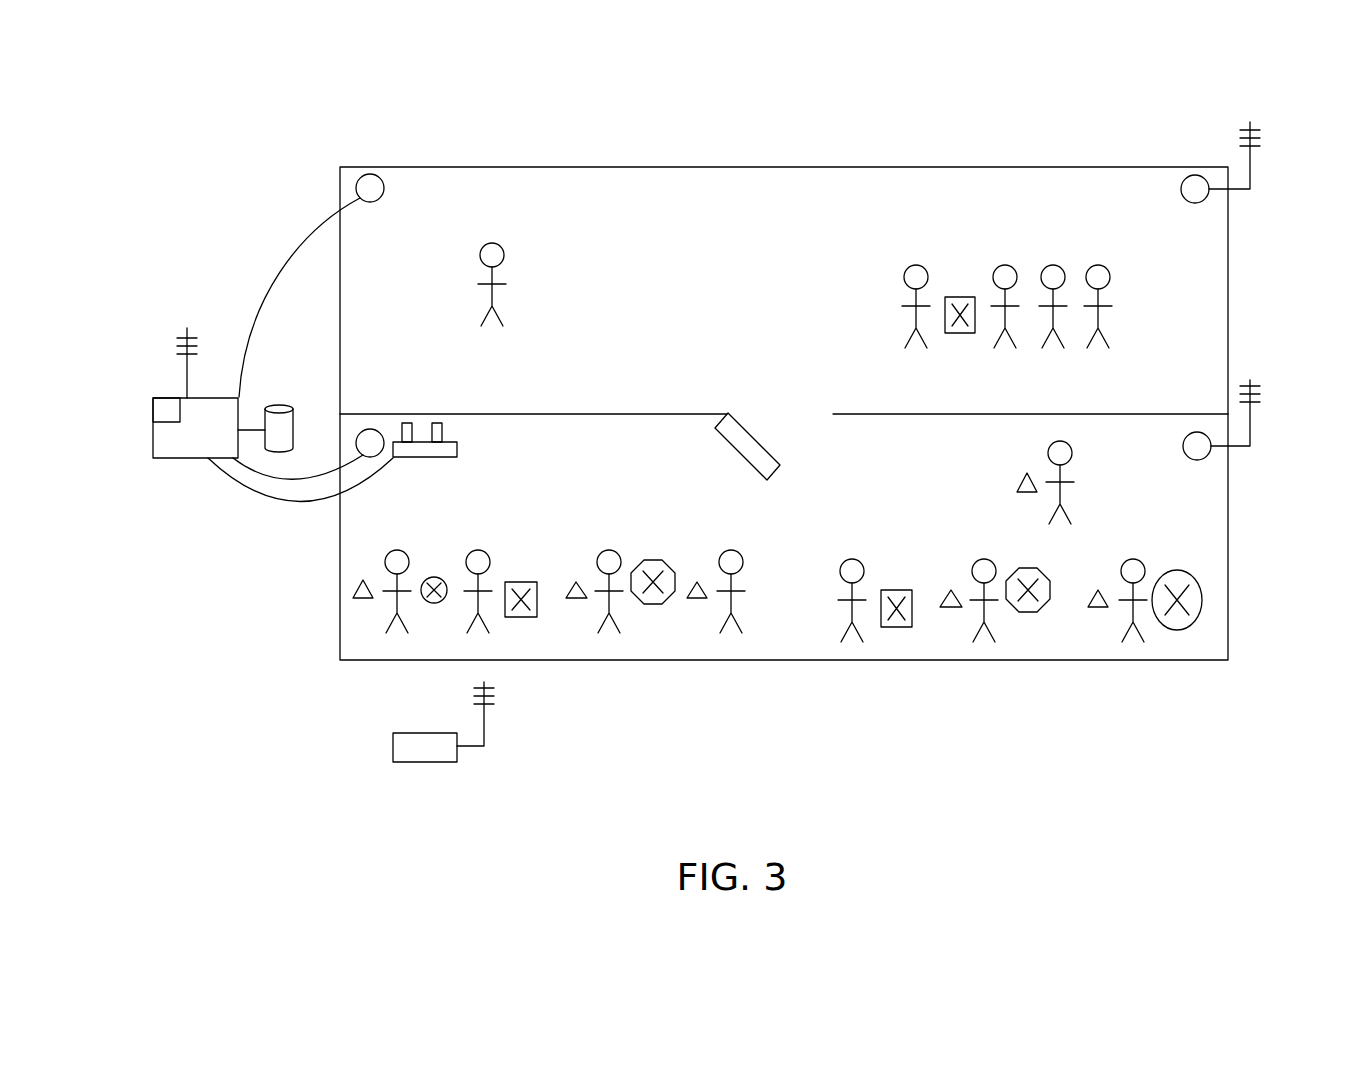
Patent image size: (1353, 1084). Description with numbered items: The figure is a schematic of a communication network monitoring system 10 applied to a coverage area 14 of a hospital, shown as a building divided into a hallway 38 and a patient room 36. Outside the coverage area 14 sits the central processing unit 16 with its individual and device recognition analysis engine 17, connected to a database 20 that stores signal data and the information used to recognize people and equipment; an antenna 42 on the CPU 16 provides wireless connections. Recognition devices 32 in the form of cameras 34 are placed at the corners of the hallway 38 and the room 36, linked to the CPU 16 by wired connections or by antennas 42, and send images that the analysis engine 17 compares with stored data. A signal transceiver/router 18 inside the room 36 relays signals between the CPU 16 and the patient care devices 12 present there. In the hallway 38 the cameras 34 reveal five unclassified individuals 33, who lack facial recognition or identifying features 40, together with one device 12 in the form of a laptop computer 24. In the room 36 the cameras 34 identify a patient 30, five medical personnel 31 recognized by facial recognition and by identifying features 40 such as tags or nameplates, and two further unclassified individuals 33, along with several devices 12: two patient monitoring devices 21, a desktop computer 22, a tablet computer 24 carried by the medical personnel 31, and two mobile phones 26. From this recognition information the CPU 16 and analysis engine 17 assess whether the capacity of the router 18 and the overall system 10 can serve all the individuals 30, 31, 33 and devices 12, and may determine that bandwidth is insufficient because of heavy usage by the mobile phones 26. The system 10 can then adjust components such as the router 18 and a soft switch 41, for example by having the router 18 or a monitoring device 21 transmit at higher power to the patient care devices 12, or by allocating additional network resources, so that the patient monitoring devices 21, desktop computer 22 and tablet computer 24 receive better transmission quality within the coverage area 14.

The communication network monitoring system 10 is at (158, 260).
The patient care device 12 is at (963, 342).
The coverage area 14 is at (936, 152).
The central processing unit 16 is at (153, 445).
The individual and device recognition analysis engine 17 is at (153, 410).
The signal transceiver/router 18 is at (457, 450).
The database 20 is at (280, 404).
The patient monitoring device 21 is at (653, 559).
The desktop computer 22 is at (434, 577).
The tablet computer 24 is at (1203, 600).
The mobile phone 26 is at (960, 297).
The patient 30 is at (731, 550).
The medical personnel 31 is at (397, 550).
The recognition device 32 is at (410, 188).
The unclassified individual 33 is at (505, 255).
The camera 34 is at (370, 173).
The patient room 36 is at (780, 635).
The hallway 38 is at (640, 213).
The identifying feature 40 is at (363, 579).
The soft switch 41 is at (427, 764).
The antenna 42 is at (1262, 148).